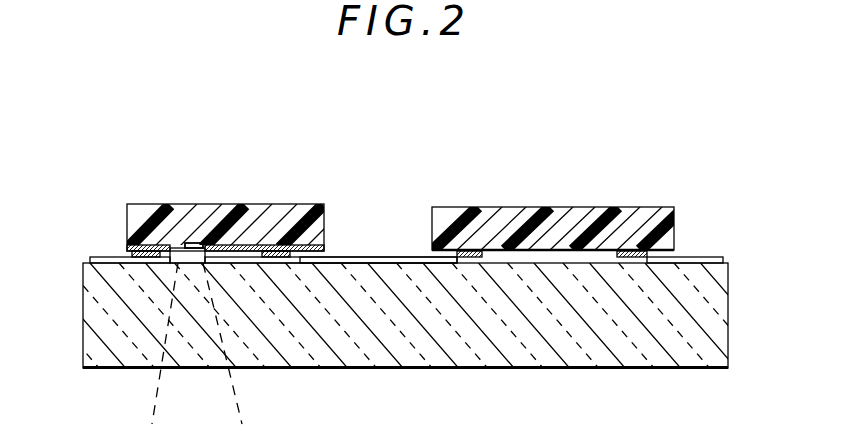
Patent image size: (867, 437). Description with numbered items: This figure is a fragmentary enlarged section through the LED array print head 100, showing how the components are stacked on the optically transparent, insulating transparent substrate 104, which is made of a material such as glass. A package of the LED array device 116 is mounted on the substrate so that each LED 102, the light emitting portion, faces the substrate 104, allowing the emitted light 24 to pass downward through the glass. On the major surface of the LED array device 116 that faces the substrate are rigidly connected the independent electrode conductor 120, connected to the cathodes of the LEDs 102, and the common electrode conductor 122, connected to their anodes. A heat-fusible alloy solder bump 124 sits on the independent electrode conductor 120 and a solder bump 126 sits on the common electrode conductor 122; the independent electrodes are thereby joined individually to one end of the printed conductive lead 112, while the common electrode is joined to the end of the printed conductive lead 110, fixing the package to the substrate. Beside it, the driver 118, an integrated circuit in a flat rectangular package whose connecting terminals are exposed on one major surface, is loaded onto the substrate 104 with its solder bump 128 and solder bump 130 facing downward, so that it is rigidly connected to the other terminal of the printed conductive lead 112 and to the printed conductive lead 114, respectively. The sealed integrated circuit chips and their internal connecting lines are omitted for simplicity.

The LED array print head 100 is at (392, 136).
The LED 102 is at (192, 243).
The transparent substrate 104 is at (718, 311).
The printed conductive lead 110 is at (103, 258).
The printed conductive lead 112 is at (405, 257).
The printed conductive lead 114 is at (700, 258).
The LED array device 116 is at (253, 212).
The driver 118 is at (530, 212).
The independent electrode conductor 120 is at (265, 246).
The common electrode conductor 122 is at (150, 250).
The solder bump 124 is at (292, 249).
The solder bump 126 is at (132, 253).
The solder bump 128 is at (468, 252).
The solder bump 130 is at (623, 251).
The light 24 is at (233, 383).